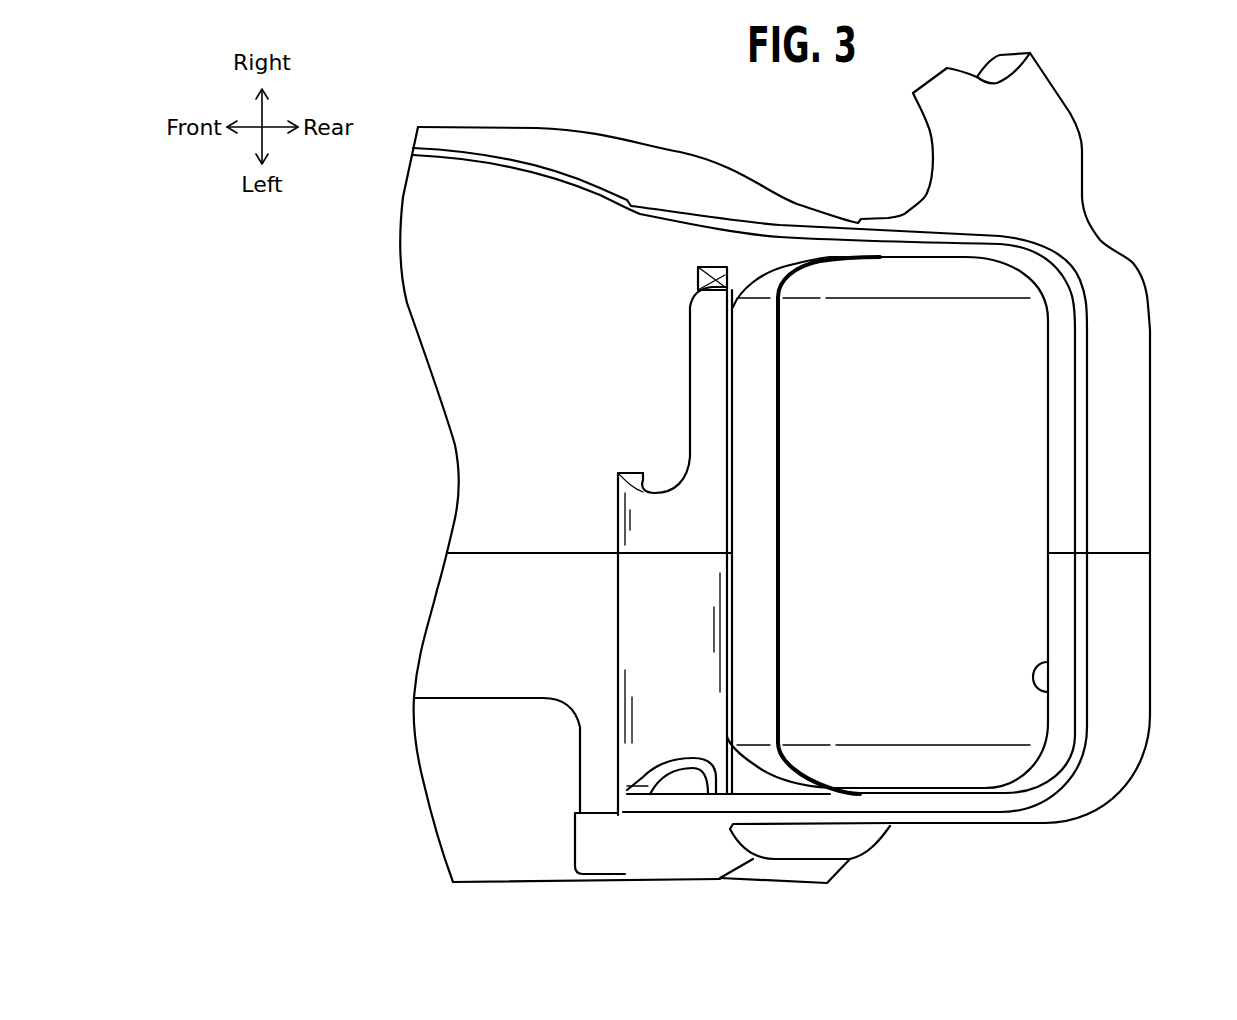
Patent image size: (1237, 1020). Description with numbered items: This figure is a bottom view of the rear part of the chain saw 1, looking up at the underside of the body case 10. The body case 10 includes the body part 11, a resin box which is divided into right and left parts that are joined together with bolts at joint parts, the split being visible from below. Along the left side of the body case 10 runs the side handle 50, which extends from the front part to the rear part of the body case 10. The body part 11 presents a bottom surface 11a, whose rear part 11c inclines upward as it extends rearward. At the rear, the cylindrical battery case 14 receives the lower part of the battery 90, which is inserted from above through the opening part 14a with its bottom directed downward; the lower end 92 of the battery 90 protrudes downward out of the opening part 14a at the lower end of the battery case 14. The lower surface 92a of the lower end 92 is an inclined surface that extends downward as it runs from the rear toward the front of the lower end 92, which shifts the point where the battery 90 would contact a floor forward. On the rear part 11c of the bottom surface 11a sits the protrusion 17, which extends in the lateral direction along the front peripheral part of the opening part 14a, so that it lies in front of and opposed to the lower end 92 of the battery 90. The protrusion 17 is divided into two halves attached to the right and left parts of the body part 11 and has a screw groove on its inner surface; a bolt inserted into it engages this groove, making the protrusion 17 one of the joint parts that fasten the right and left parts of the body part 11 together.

The chain saw 1 is at (705, 119).
The body case 10 is at (630, 109).
The body part 11 is at (520, 142).
The bottom surface 11a is at (460, 300).
The rear part 11c is at (583, 433).
The battery case 14 is at (1137, 640).
The opening part 14a is at (1047, 690).
The protrusion 17 is at (693, 727).
The side handle 50 is at (1043, 92).
The battery 90 is at (1010, 418).
The lower end 92 is at (895, 507).
The lower surface 92a is at (895, 340).